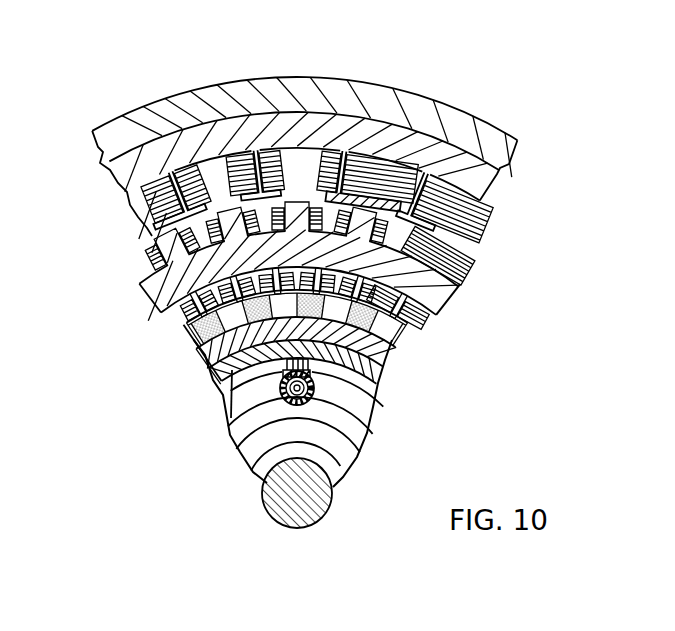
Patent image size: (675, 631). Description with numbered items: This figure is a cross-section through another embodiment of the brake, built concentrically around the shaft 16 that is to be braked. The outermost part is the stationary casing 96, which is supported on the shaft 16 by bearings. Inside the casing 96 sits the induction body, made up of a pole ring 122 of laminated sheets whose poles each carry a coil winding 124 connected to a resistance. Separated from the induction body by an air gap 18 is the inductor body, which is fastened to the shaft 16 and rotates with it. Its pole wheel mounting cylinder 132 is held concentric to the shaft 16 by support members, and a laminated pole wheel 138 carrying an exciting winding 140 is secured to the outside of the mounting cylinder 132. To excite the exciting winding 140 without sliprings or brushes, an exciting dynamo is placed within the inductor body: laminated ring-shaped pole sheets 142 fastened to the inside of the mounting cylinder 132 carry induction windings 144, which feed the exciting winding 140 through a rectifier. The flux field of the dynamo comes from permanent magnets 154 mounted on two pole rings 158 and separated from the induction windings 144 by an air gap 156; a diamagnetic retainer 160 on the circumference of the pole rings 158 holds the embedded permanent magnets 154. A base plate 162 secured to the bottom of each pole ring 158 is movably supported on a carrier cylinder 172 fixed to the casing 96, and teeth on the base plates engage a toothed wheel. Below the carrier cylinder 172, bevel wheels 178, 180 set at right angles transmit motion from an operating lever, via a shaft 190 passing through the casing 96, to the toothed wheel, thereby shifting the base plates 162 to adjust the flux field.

The shaft 16 is at (315, 513).
The air gap 18 is at (146, 242).
The stationary casing 96 is at (271, 86).
The pole ring 122 is at (357, 124).
The coil winding 124 is at (190, 168).
The pole wheel mounting cylinder 132 is at (166, 300).
The pole wheel 138 is at (143, 290).
The exciting winding 140 is at (461, 268).
The pole sheets 142 is at (438, 304).
The induction windings 144 is at (426, 331).
The permanent magnets 154 is at (201, 358).
The air gap 156 is at (184, 331).
The pole rings 158 is at (388, 354).
The retainer 160 is at (405, 334).
The base plate 162 is at (205, 370).
The carrier cylinder 172 is at (228, 417).
The bevel wheel 178 is at (374, 388).
The bevel wheel 180 is at (375, 413).
The shaft 190 is at (366, 443).